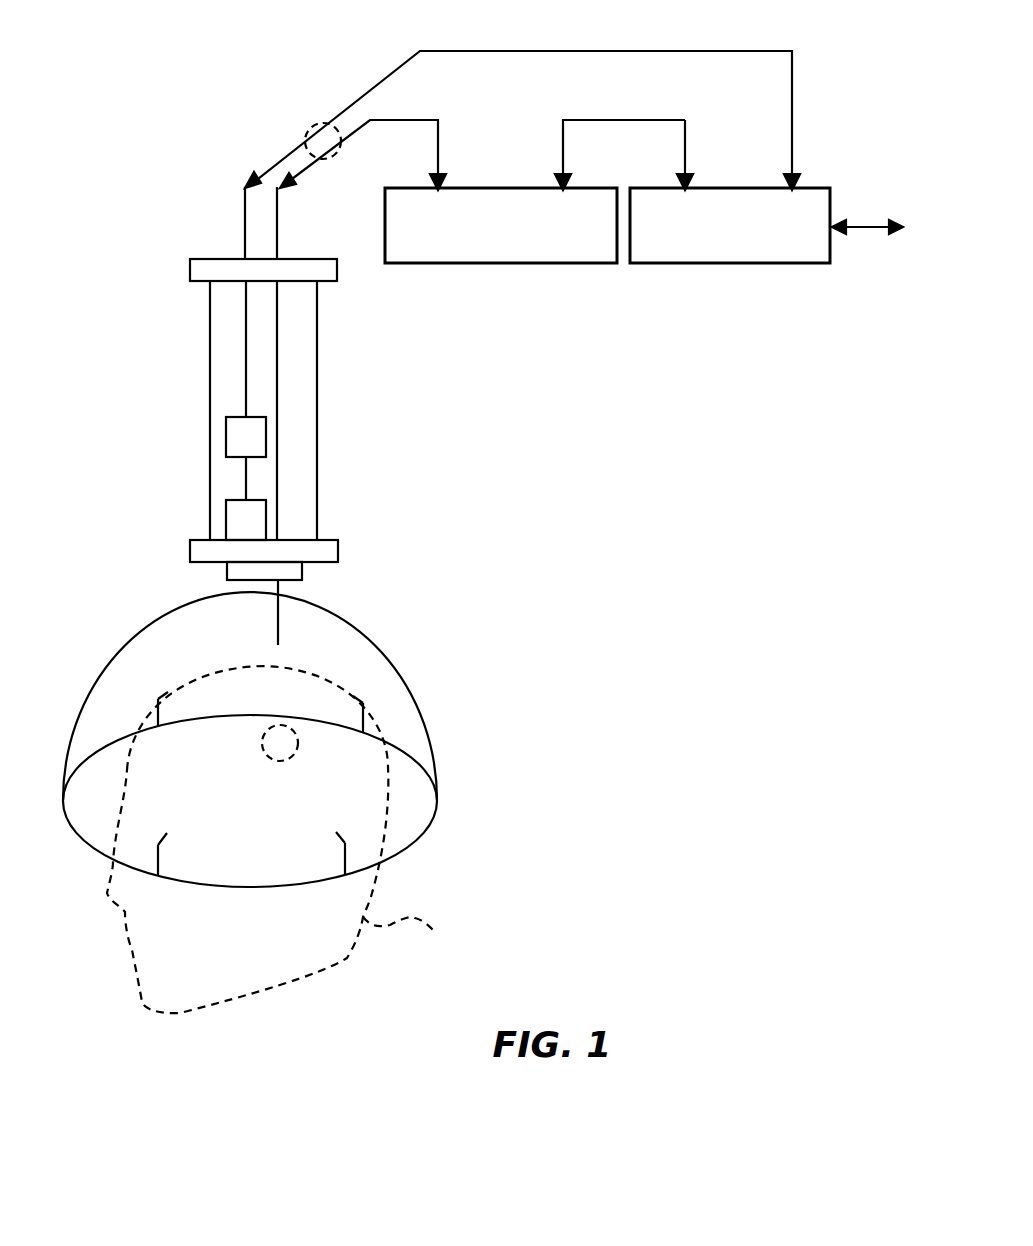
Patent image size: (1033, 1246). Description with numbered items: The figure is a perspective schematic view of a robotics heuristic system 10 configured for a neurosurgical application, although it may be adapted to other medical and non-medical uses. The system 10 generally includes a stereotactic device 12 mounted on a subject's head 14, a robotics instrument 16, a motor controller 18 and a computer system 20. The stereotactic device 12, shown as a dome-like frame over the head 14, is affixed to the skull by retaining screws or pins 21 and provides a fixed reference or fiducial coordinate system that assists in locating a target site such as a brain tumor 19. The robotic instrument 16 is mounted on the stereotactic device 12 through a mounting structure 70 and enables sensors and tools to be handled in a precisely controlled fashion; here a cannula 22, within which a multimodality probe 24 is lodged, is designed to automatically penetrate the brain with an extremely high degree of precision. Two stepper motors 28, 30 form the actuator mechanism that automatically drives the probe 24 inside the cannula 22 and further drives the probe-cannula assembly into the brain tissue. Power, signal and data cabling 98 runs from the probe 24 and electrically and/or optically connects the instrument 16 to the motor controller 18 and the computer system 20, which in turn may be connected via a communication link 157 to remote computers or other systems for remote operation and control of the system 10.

The robotics heuristic system 10 is at (178, 50).
The power, signal and data cabling 98 is at (307, 128).
The motor controller 18 is at (481, 258).
The computer system 20 is at (742, 258).
The communication link 157 is at (867, 229).
The robotics instrument 16 is at (255, 410).
The probe 24 is at (278, 378).
The stepper motor 28 is at (235, 435).
The stepper motor 30 is at (232, 517).
The mounting structure 70 is at (328, 583).
The cannula 22 is at (280, 627).
The stereotactic device 12 is at (433, 742).
The brain tumor 19 is at (292, 756).
The retaining screws or pins 21 is at (158, 848).
The subject's head 14 is at (288, 839).